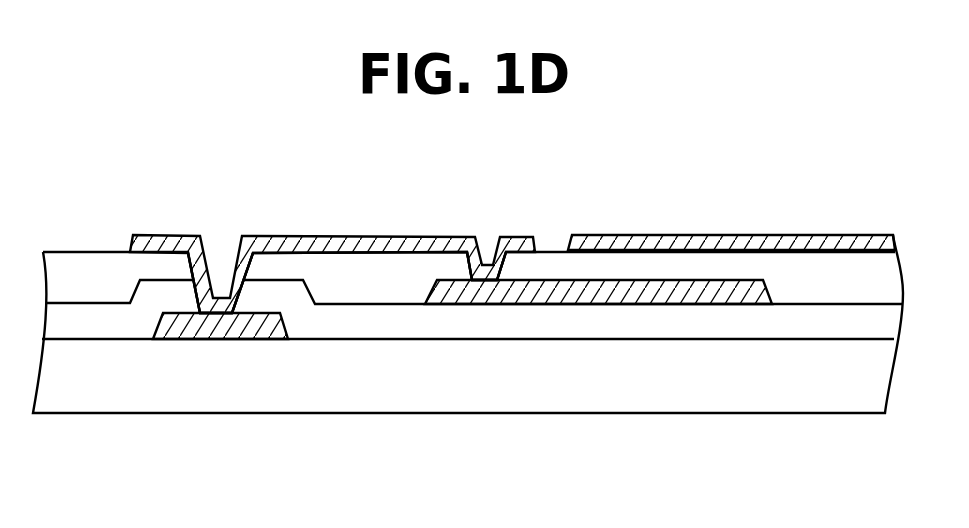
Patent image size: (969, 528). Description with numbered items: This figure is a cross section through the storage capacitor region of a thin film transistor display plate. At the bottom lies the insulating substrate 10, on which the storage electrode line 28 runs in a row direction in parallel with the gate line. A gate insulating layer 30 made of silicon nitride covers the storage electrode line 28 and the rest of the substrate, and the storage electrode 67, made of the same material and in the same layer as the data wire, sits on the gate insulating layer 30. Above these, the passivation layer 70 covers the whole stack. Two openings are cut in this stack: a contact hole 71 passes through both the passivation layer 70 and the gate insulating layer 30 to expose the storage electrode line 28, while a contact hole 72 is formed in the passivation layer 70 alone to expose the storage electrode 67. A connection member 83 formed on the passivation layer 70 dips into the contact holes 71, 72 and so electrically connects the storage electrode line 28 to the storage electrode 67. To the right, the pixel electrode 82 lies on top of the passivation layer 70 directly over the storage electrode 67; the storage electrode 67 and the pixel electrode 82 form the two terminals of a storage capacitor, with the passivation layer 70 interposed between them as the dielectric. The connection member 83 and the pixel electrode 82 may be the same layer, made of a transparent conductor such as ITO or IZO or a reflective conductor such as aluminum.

The insulating substrate 10 is at (163, 390).
The storage electrode line 28 is at (243, 333).
The gate insulating layer 30 is at (375, 323).
The storage electrode 67 is at (570, 293).
The passivation layer 70 is at (78, 285).
The contact hole 71 is at (211, 212).
The contact hole 72 is at (479, 212).
The pixel electrode 82 is at (633, 245).
The connection member 83 is at (287, 235).